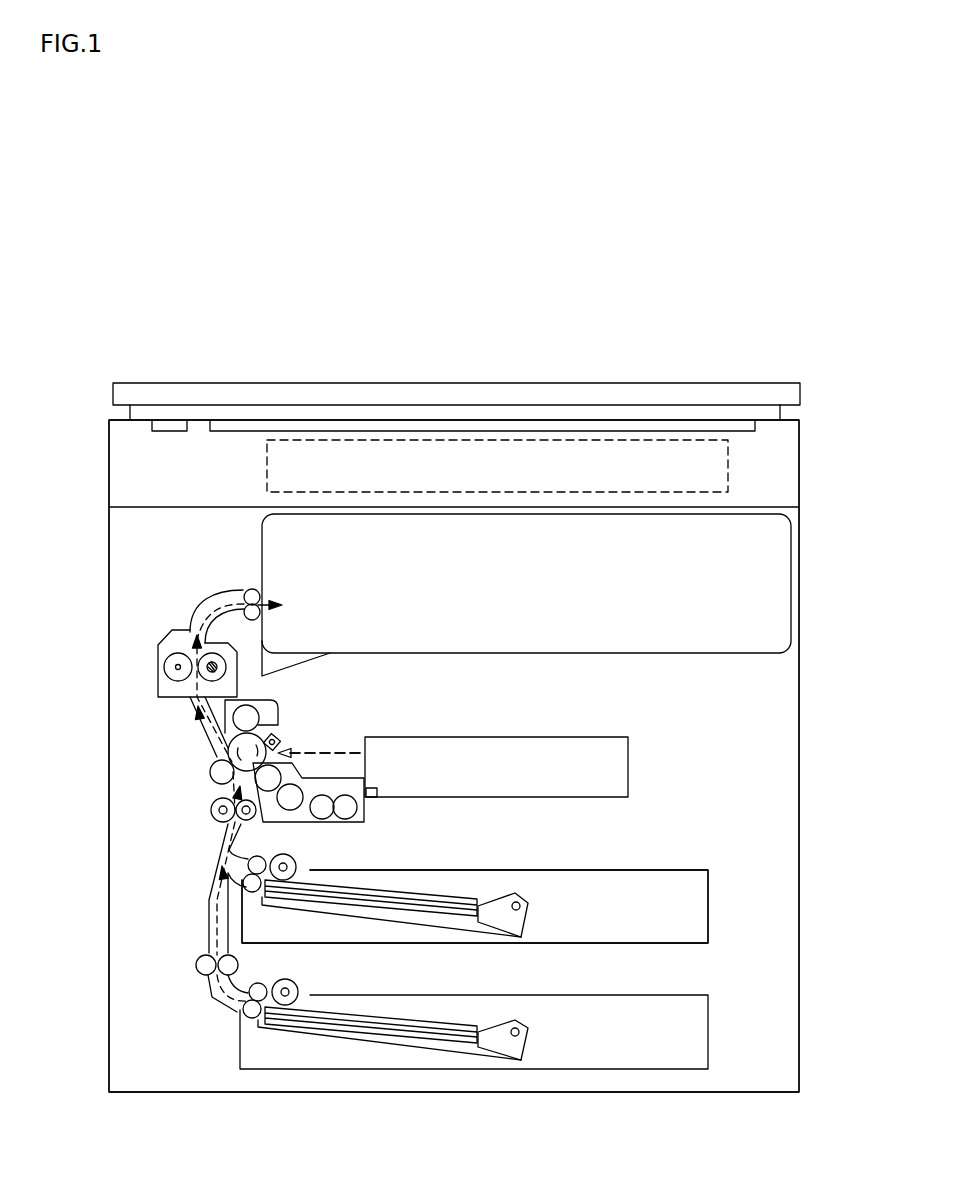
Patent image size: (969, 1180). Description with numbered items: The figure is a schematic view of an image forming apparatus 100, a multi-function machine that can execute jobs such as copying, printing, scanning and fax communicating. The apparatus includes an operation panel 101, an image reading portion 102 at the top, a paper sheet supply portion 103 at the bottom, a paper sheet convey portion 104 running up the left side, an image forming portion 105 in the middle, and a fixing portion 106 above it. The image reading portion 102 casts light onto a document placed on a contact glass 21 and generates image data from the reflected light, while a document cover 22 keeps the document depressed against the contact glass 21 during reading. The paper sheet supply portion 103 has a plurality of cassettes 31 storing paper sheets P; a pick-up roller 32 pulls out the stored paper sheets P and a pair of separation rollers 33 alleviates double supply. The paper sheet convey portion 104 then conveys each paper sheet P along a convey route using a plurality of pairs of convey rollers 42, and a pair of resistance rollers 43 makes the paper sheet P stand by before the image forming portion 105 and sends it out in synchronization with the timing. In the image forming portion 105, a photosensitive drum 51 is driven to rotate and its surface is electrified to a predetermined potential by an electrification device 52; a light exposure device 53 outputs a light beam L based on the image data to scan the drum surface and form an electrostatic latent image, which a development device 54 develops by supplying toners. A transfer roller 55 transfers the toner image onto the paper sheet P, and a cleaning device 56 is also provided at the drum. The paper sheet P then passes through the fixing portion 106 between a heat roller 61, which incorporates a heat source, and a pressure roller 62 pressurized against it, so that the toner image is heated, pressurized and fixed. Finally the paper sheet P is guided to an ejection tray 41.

The image forming apparatus 100 is at (112, 351).
The operation panel 101 is at (256, 474).
The image reading portion 102 is at (809, 502).
The paper sheet supply portion 103 is at (720, 901).
The paper sheet convey portion 104 is at (206, 862).
The image forming portion 105 is at (345, 730).
The fixing portion 106 is at (146, 637).
The contact glass 21 is at (393, 430).
The document cover 22 is at (283, 395).
The cassette 31 is at (607, 868).
The pick-up roller 32 is at (296, 861).
The pair of separation rollers 33 is at (253, 852).
The ejection tray 41 is at (561, 650).
The pair of convey rollers 42 is at (248, 590).
The pair of resistance rollers 43 is at (210, 810).
The photosensitive drum 51 is at (230, 745).
The electrification device 52 is at (278, 738).
The light exposure device 53 is at (484, 745).
The development device 54 is at (362, 812).
The transfer roller 55 is at (210, 772).
The cleaning device 56 is at (275, 703).
The heat roller 61 is at (222, 657).
The pressure roller 62 is at (165, 667).
The light beam L is at (355, 750).
The paper sheet P is at (467, 900).